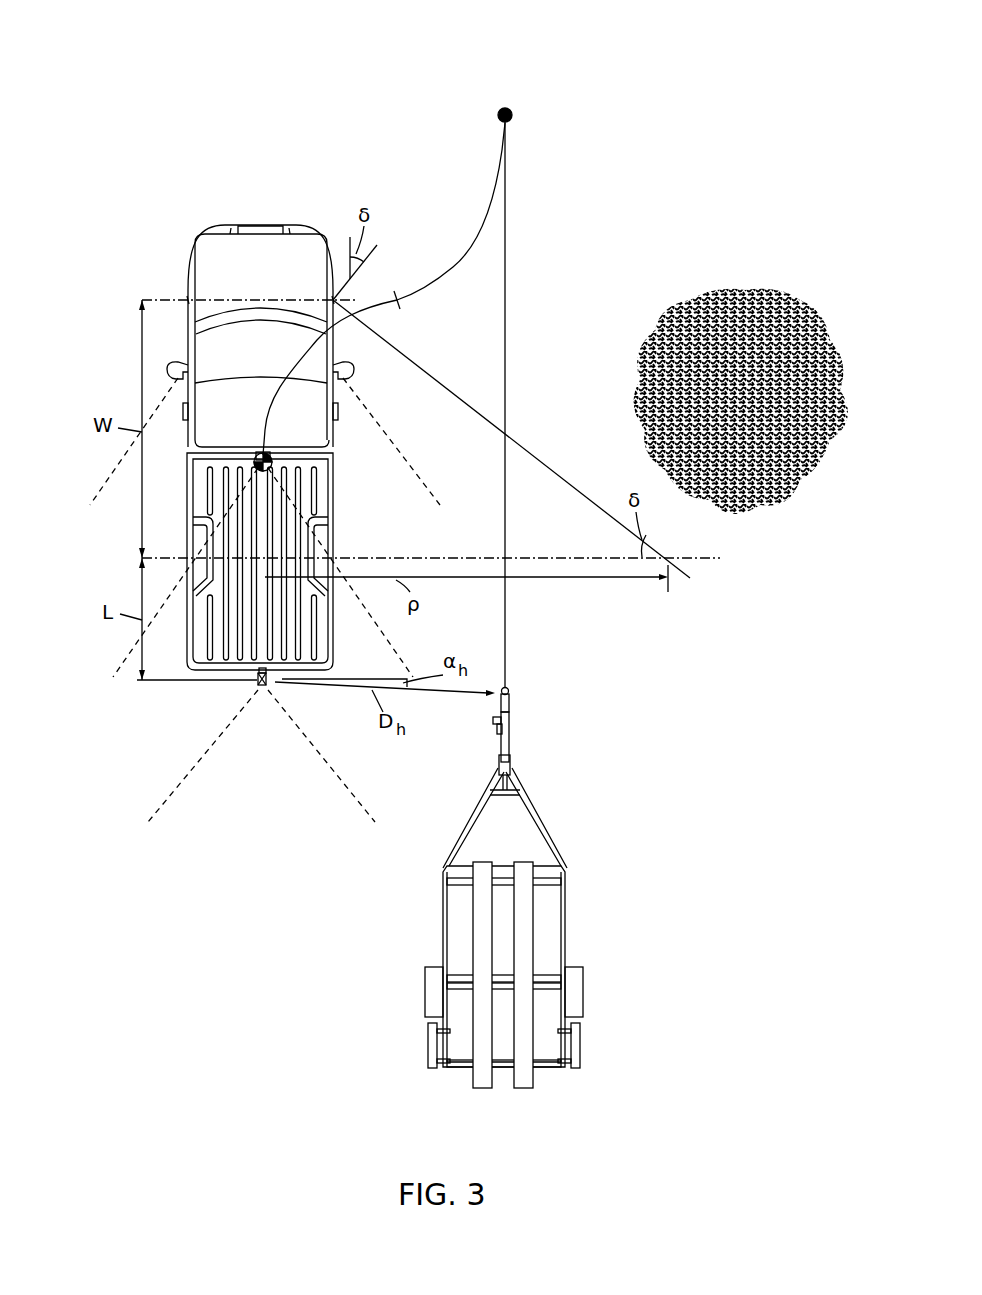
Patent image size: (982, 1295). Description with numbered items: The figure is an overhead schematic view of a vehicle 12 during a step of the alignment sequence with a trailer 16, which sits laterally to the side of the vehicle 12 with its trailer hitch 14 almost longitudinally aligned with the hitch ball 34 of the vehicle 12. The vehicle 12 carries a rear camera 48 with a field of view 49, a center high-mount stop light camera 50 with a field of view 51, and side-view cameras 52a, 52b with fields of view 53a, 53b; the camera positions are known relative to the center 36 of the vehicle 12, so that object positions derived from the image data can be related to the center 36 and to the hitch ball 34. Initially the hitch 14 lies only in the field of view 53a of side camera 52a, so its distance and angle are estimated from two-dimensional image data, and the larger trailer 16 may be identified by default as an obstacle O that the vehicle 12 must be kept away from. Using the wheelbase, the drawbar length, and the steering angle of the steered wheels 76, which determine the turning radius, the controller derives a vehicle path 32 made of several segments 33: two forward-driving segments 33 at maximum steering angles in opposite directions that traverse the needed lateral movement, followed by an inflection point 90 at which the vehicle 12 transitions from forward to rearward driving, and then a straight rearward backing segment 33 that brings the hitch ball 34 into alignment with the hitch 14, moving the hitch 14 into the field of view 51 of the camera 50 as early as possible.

The vehicle 12 is at (166, 226).
The trailer hitch 14 is at (512, 693).
The trailer 16 is at (436, 911).
The vehicle path 32 is at (584, 66).
The path segment 33 is at (514, 318).
The hitch ball 34 is at (256, 684).
The center of vehicle 36 is at (254, 466).
The rear camera 48 is at (266, 672).
The field of view of rear camera 49 is at (183, 784).
The center high-mount stop light camera 50 is at (258, 455).
The field of view of CMHSL camera 51 is at (122, 665).
The side-view camera 52a is at (352, 384).
The side-view camera 52b is at (176, 378).
The field of view of side-view camera 53a is at (416, 462).
The field of view of side-view camera 53b is at (100, 485).
The steered wheels 76 is at (180, 312).
The inflection point 90 is at (499, 108).
The obstacle O is at (784, 290).